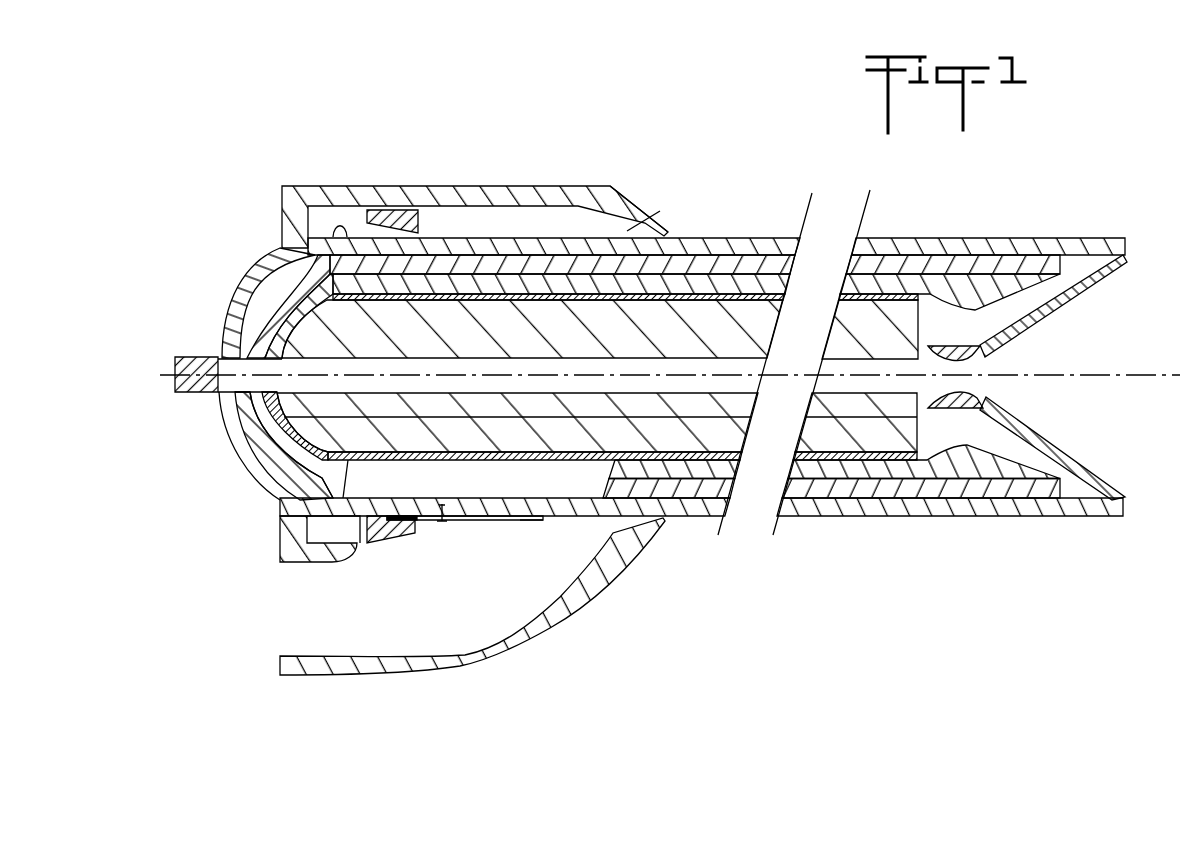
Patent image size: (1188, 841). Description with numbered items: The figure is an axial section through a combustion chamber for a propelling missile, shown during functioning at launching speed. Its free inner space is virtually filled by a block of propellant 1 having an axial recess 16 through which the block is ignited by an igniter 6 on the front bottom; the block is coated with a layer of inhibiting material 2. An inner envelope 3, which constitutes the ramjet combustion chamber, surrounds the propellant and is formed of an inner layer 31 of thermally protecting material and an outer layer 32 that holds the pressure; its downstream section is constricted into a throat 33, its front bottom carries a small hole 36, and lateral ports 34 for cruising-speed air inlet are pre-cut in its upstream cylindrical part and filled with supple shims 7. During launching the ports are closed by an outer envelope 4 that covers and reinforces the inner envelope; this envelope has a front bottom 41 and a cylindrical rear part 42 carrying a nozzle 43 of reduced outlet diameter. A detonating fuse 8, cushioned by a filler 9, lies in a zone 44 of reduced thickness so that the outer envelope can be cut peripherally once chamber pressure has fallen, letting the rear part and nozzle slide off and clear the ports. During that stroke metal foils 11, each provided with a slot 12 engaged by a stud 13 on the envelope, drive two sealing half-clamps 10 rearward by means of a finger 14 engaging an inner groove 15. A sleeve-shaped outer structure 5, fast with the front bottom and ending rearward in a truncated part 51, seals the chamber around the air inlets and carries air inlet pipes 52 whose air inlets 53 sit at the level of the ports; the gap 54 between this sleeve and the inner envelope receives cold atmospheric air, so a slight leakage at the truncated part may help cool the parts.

The block of propellant 1 is at (752, 318).
The layer of inhibiting material 2 is at (906, 300).
The inner envelope 3 is at (246, 357).
The outer envelope 4 is at (831, 529).
The outer structure (sleeve) 5 is at (492, 186).
The igniter 6 is at (197, 357).
The shims 7 is at (572, 482).
The detonating fuse 8 is at (330, 530).
The filler 9 is at (333, 505).
The sealing half-clamps 10 is at (398, 540).
The metal foils 11 is at (535, 521).
The slot 12 is at (485, 521).
The stud 13 is at (440, 526).
The finger 14 is at (375, 547).
The inner groove 15 is at (418, 223).
The axial recess 16 is at (547, 358).
The inner layer 31 is at (698, 280).
The outer layer 32 is at (1045, 265).
The throat 33 is at (975, 445).
The lateral ports 34 is at (348, 464).
The hole 36 is at (225, 394).
The front bottom 41 is at (228, 440).
The cylindrical rear part 42 is at (968, 516).
The nozzle 43 is at (975, 397).
The cut zone 44 is at (337, 509).
The truncated rear part 51 is at (642, 207).
The air inlet pipes 52 is at (492, 650).
The air inlets 53 is at (298, 562).
The gap 54 is at (647, 218).